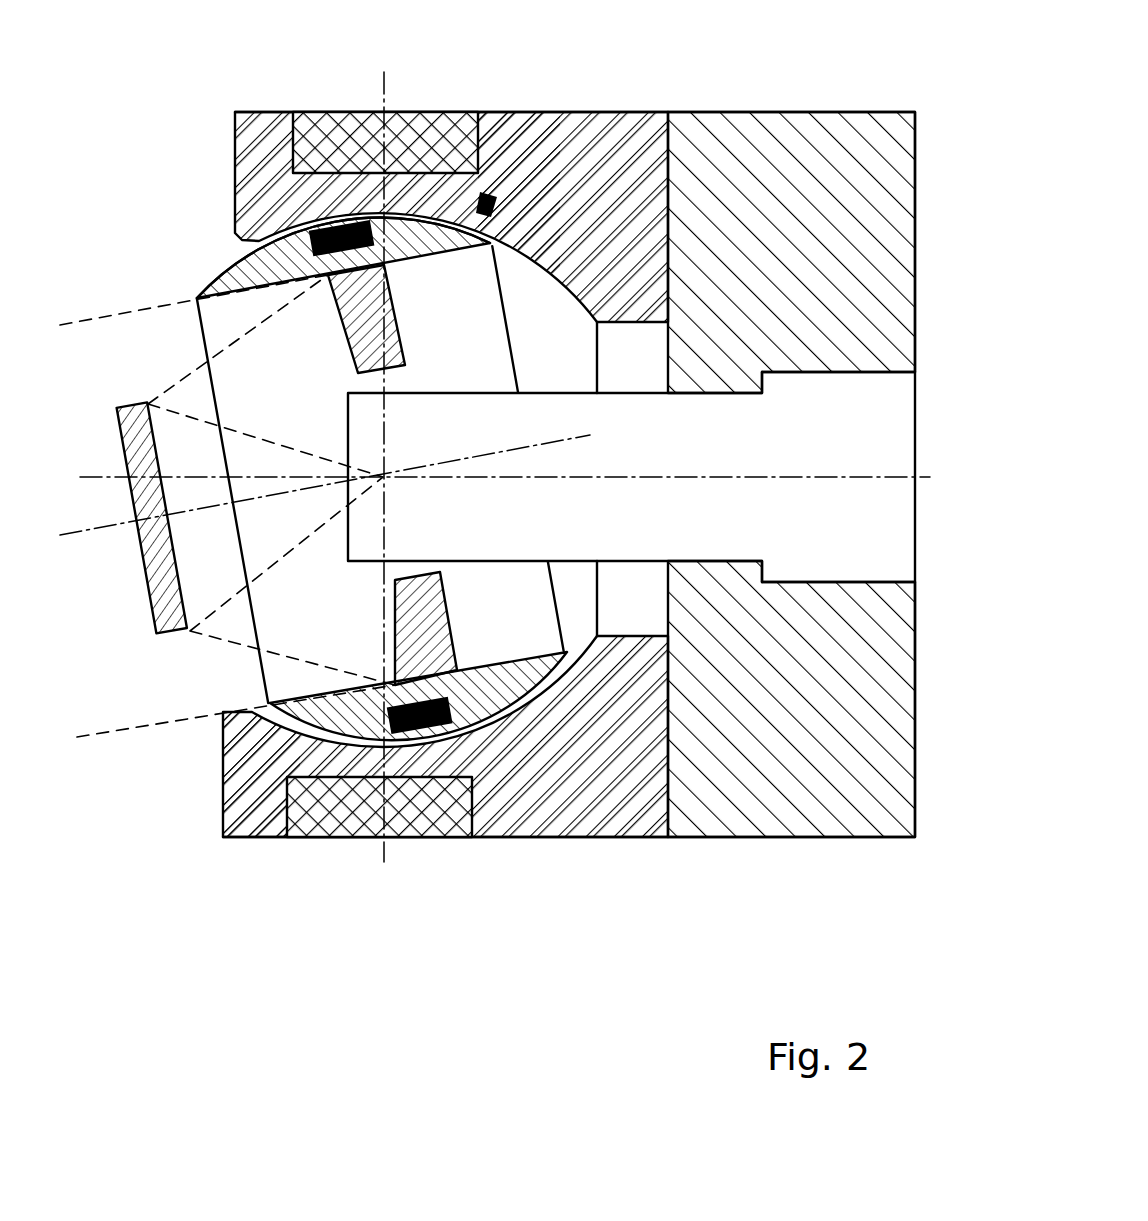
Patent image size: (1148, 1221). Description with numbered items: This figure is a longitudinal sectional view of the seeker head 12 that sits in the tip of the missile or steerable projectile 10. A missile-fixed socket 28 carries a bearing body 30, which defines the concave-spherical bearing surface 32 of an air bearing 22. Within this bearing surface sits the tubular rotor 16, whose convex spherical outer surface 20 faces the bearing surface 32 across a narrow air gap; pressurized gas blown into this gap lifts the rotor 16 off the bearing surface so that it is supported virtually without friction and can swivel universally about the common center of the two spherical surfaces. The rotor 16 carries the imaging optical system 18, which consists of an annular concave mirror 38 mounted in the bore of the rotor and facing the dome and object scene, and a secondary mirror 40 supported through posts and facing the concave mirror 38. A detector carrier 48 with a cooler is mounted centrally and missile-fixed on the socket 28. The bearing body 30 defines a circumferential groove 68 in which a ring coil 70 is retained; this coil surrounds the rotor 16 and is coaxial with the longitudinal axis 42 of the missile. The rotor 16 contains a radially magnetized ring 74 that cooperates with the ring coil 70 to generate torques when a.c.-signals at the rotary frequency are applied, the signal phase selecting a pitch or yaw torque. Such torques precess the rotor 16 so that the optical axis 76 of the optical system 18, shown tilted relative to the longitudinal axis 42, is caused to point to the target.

The missile or steerable projectile 10 is at (758, 112).
The seeker head 12 is at (528, 838).
The rotor 16 is at (431, 215).
The imaging optical system 18 is at (208, 643).
The spherical outer surface 20 is at (206, 278).
The air bearing 22 is at (455, 785).
The missile-fixed socket 28 is at (722, 835).
The bearing body 30 is at (622, 800).
The concave-spherical bearing surface 32 is at (268, 800).
The annular concave mirror 38 is at (403, 343).
The secondary mirror 40 is at (160, 602).
The longitudinal axis 42 is at (657, 470).
The detector carrier 48 is at (560, 413).
The circumferential groove 68 is at (482, 150).
The ring coil 70 is at (366, 137).
The radially magnetized ring 74 is at (455, 680).
The optical axis 76 is at (93, 527).